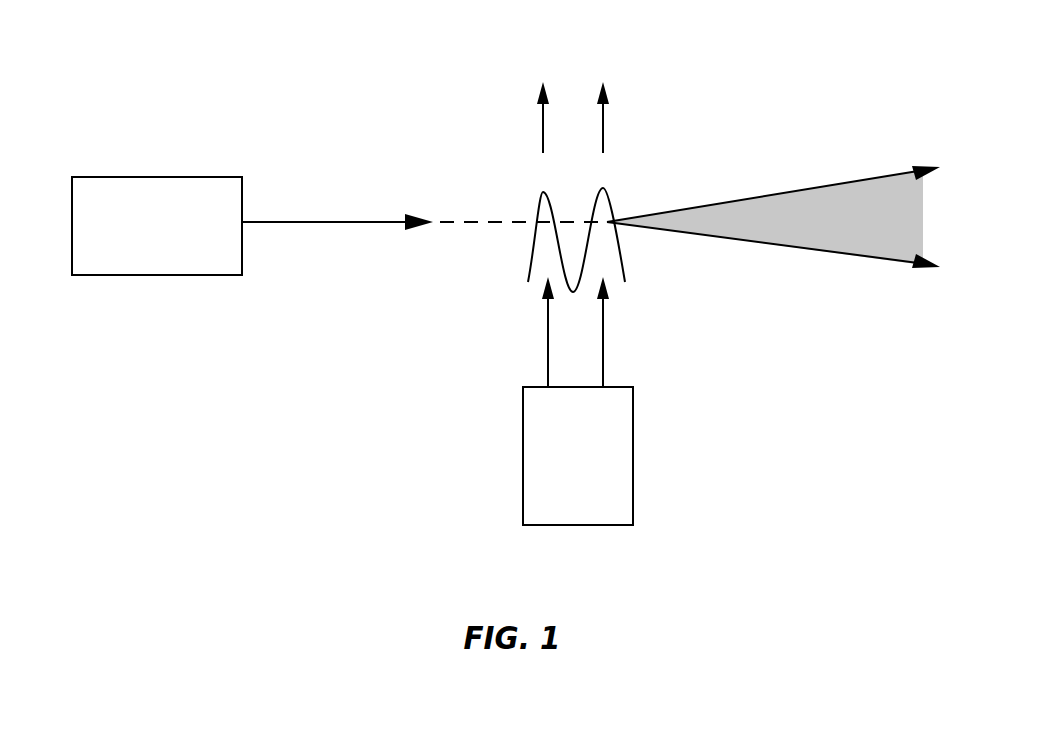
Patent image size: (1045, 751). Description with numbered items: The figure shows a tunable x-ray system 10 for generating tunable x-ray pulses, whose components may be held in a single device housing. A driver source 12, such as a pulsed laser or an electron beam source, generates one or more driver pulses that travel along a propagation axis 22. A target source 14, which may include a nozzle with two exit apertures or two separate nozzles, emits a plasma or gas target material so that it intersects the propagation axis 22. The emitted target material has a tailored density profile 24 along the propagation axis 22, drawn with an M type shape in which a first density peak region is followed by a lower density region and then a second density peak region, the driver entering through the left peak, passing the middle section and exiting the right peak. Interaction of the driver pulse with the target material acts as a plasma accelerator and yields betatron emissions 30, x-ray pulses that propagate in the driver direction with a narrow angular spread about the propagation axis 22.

The tunable x-ray system 10 is at (108, 32).
The driver source 12 is at (190, 177).
The target source 14 is at (615, 387).
The propagation axis 22 is at (320, 222).
The tailored density profile 24 is at (603, 180).
The betatron emissions 30 is at (735, 193).